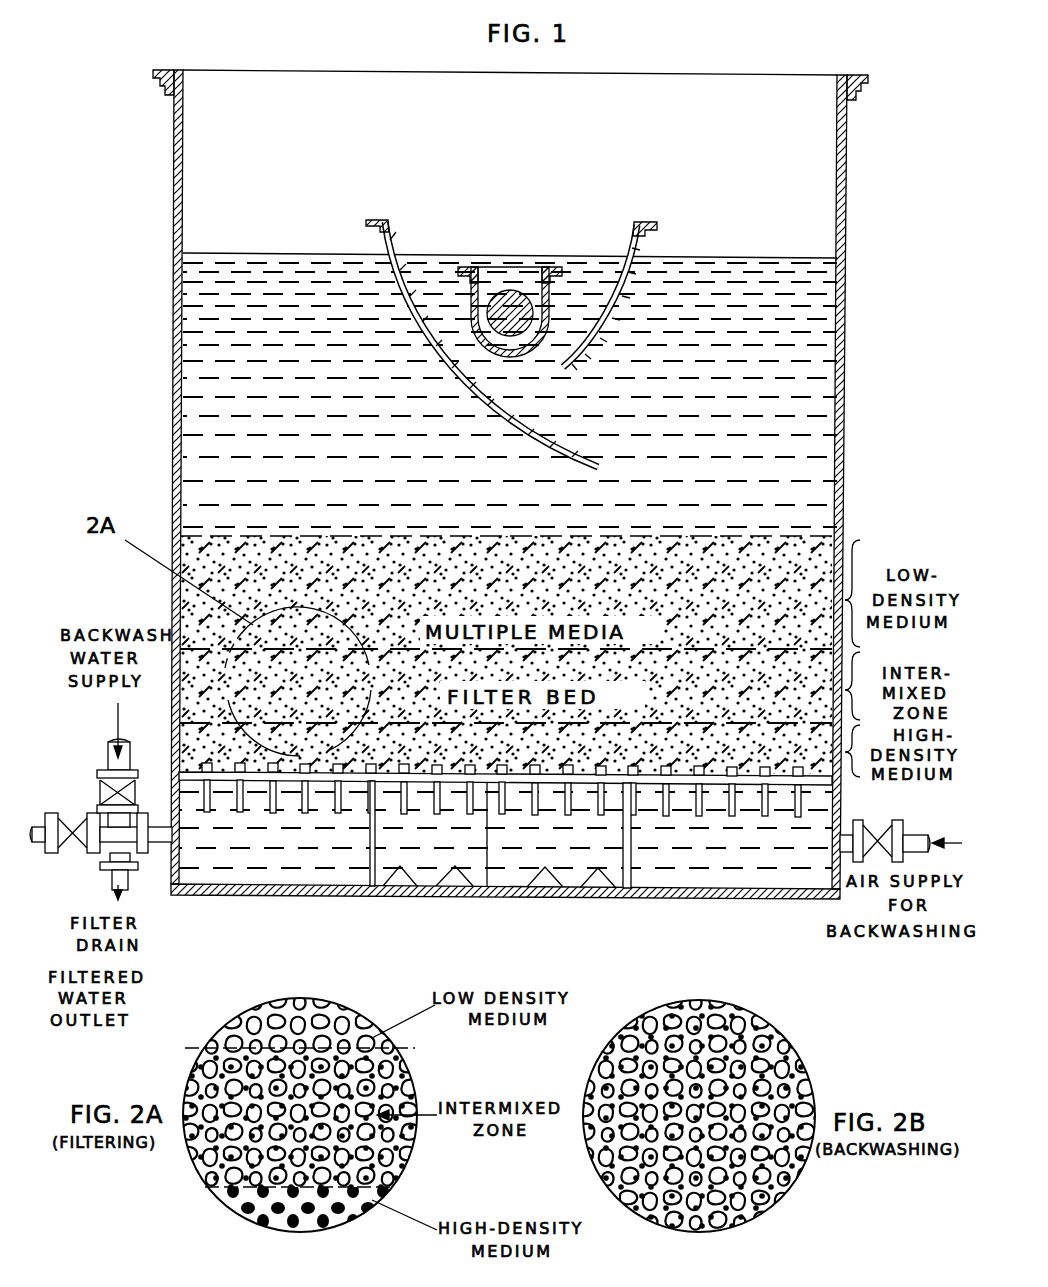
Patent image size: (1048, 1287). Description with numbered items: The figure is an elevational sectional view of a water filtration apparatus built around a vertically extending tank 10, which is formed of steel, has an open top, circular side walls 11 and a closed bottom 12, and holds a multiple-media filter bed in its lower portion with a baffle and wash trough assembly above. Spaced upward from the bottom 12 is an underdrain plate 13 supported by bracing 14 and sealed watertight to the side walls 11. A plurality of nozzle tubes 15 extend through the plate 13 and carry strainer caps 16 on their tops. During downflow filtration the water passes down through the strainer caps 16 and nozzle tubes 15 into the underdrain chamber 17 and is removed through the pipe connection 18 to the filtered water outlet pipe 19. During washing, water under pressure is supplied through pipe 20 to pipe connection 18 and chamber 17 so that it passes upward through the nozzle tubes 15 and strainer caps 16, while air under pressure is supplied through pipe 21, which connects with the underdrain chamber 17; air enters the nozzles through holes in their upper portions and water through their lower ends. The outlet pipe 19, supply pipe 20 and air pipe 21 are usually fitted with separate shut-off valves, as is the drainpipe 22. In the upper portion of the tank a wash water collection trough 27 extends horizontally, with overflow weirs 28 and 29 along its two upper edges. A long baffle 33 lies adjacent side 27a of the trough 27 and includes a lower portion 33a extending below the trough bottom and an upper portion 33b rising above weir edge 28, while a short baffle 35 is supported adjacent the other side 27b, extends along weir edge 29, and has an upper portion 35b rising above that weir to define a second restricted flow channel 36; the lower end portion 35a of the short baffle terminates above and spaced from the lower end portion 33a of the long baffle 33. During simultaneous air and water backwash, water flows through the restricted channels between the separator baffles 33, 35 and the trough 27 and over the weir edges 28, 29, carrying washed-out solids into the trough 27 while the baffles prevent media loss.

The tank 10 is at (848, 353).
The side walls 11 is at (845, 246).
The bottom 12 is at (668, 899).
The underdrain plate 13 is at (383, 797).
The bracing 14 is at (376, 856).
The nozzle tubes 15 is at (241, 783).
The strainer caps 16 is at (220, 774).
The underdrain chamber 17 is at (332, 861).
The pipe connection 18 is at (162, 843).
The filtered water outlet pipe 19 is at (45, 965).
The pipe 20 is at (130, 762).
The pipe 21 is at (907, 835).
The drainpipe 22 is at (112, 872).
The wash water collection trough 27 is at (549, 303).
The side of trough 27a is at (476, 298).
The side of trough 27b is at (549, 322).
The overflow weir 28 is at (468, 266).
The overflow weir 29 is at (562, 268).
The long baffle 33 is at (418, 337).
The lower portion of long baffle 33a is at (548, 446).
The upper portion of long baffle 33b is at (386, 246).
The short baffle 35 is at (611, 322).
The lower end portion of short baffle 35a is at (567, 368).
The upper portion of short baffle 35b is at (645, 255).
The second restricted flow channel 36 is at (570, 333).